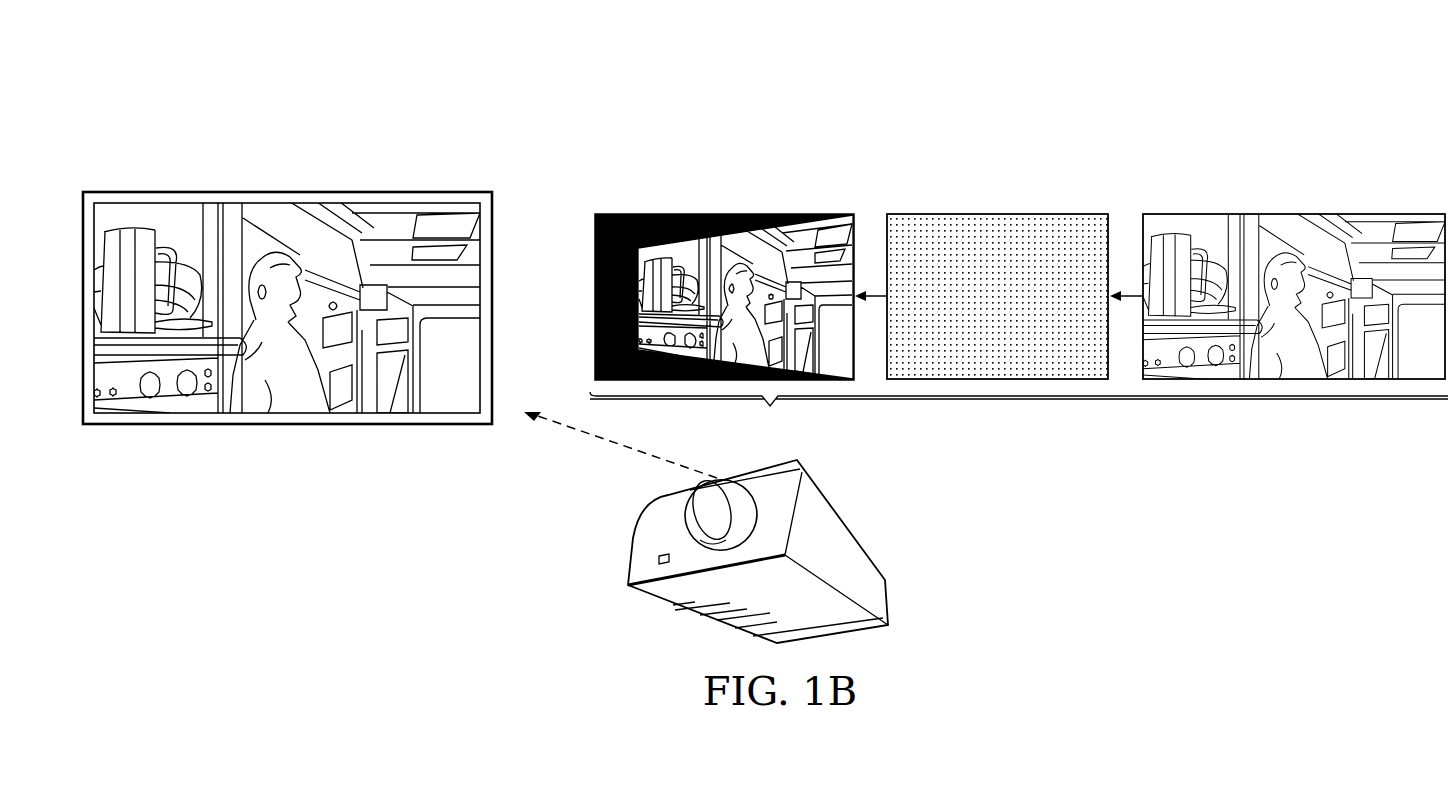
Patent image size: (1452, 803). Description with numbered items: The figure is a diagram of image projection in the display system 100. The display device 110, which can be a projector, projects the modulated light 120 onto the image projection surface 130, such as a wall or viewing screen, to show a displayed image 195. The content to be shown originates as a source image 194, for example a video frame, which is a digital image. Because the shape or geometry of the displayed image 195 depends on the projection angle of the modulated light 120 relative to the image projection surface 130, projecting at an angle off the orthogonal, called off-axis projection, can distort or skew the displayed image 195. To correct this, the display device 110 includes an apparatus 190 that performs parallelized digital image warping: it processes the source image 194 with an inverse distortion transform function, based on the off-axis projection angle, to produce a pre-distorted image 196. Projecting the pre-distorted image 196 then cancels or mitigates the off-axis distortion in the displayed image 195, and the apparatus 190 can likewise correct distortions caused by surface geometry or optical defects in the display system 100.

The display system 100 is at (358, 96).
The display device 110 is at (885, 598).
The modulated light 120 is at (597, 452).
The image projection surface 130 is at (222, 192).
The apparatus 190 is at (997, 214).
The source image 194 is at (1292, 214).
The displayed image 195 is at (350, 203).
The pre-distorted image 196 is at (722, 214).